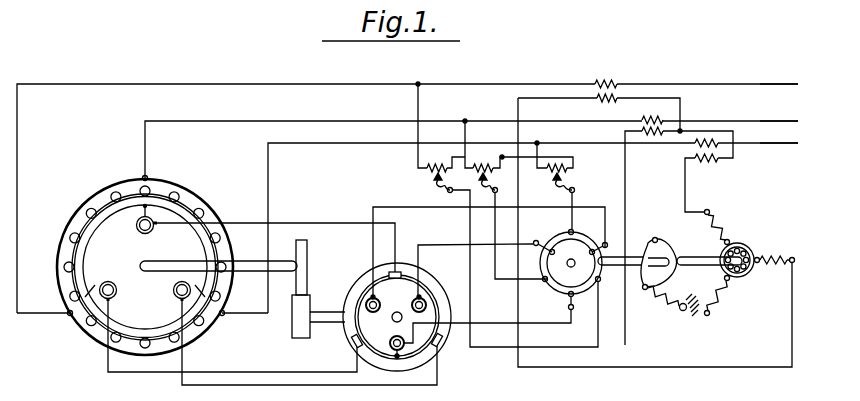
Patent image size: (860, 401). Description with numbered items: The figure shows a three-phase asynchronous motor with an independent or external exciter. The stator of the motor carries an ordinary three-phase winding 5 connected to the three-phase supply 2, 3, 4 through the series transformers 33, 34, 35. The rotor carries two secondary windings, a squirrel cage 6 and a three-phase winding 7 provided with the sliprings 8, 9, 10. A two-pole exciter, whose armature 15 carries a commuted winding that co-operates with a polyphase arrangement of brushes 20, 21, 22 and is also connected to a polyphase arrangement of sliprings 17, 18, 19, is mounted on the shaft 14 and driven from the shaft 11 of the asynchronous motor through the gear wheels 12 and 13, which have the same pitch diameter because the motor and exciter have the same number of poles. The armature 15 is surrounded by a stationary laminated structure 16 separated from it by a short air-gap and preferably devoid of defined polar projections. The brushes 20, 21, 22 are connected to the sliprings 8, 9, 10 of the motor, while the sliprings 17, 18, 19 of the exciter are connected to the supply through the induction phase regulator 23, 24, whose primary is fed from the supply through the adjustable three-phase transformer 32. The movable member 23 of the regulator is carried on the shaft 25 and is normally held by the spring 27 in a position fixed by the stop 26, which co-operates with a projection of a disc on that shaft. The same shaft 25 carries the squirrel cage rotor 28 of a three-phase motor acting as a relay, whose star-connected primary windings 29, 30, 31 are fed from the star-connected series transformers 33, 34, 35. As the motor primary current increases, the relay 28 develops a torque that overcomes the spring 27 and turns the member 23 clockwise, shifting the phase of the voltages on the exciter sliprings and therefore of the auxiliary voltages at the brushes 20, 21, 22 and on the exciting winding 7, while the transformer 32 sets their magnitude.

The three-phase supply 2 is at (784, 84).
The three-phase supply 3 is at (784, 121).
The three-phase supply 4 is at (784, 144).
The three-phase winding 5 is at (124, 182).
The squirrel cage 6 is at (186, 208).
The three-phase winding 7 is at (88, 230).
The slipring 8 is at (140, 219).
The slipring 9 is at (101, 284).
The slipring 10 is at (178, 293).
The shaft 11 is at (266, 263).
The gear wheel 12 is at (305, 250).
The gear wheel 13 is at (296, 334).
The shaft 14 is at (333, 313).
The armature 15 is at (401, 287).
The stationary laminated structure 16 is at (405, 362).
The slipring 17 is at (411, 303).
The slipring 18 is at (371, 310).
The slipring 19 is at (389, 347).
The brush 20 is at (352, 343).
The brush 21 is at (400, 270).
The brush 22 is at (439, 342).
The movable member of the induction regulator 23 is at (565, 277).
The induction phase regulator 24 is at (562, 233).
The shaft 25 is at (617, 266).
The stop 26 is at (654, 236).
The spring 27 is at (662, 301).
The squirrel cage rotor 28 is at (745, 276).
The primary winding 29 is at (713, 295).
The primary winding 30 is at (720, 224).
The primary winding 31 is at (780, 251).
The adjustable three-phase transformer 32 is at (425, 172).
The series transformer 33 is at (720, 161).
The series transformer 34 is at (665, 119).
The series transformer 35 is at (622, 81).